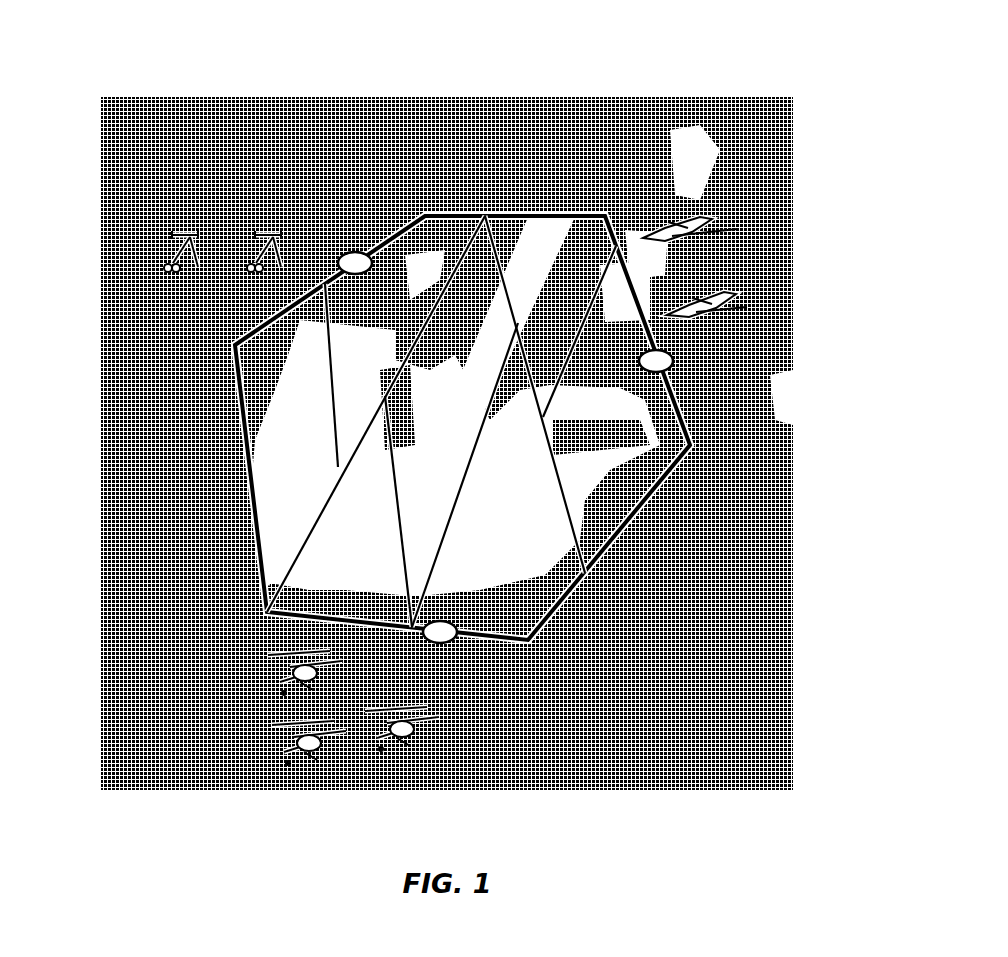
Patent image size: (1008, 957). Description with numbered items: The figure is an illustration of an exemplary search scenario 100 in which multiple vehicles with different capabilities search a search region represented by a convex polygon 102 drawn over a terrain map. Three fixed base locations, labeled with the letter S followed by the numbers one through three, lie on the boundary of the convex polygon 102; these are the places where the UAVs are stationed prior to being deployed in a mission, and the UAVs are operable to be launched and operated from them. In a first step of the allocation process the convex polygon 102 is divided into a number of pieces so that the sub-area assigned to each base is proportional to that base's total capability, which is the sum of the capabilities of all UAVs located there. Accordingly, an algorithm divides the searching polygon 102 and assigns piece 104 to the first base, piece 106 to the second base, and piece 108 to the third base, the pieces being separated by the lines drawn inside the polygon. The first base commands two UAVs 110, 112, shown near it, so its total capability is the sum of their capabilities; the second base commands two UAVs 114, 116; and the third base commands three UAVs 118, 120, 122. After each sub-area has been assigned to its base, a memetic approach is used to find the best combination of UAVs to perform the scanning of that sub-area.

The surveillance environment / terrain map 100 is at (431, 25).
The convex polygon 102 is at (657, 487).
The piece 104 is at (413, 267).
The piece 106 is at (600, 390).
The piece 108 is at (473, 593).
The UAV 110 is at (170, 263).
The UAV 112 is at (250, 270).
The UAV 114 is at (737, 229).
The UAV 116 is at (747, 307).
The UAV 118 is at (290, 680).
The UAV 120 is at (298, 762).
The UAV 122 is at (393, 752).